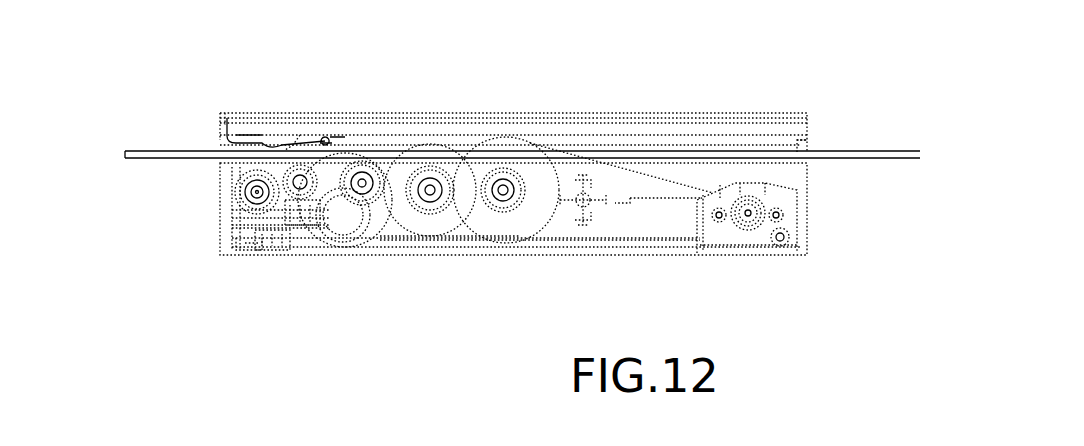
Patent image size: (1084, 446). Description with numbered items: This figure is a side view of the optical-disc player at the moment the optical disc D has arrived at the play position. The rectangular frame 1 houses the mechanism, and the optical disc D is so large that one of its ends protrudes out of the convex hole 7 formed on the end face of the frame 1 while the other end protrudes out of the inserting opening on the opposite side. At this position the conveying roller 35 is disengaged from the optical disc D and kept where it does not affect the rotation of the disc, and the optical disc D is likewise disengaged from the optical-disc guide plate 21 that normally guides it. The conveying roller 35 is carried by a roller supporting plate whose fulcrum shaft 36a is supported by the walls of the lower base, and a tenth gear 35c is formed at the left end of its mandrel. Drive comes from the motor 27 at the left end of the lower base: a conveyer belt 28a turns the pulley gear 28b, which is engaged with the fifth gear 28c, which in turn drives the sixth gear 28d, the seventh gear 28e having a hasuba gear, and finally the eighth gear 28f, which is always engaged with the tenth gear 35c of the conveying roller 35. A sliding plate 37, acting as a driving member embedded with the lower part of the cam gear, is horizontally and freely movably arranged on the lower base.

The optical disc D is at (125, 150).
The frame 1 is at (370, 115).
The convex hole 7 is at (808, 152).
The optical-disc guide plate 21 is at (230, 142).
The tenth gear 35c is at (262, 178).
The conveying roller 35 is at (226, 176).
The sliding plate 37 is at (232, 208).
The fulcrum shaft 36a is at (233, 232).
The eighth gear 28f is at (270, 235).
The seventh gear 28e is at (350, 240).
The sixth gear 28d is at (390, 240).
The fifth gear 28c is at (445, 240).
The pulley gear 28b is at (508, 232).
The conveyer belt 28a is at (592, 243).
The motor 27 is at (746, 258).